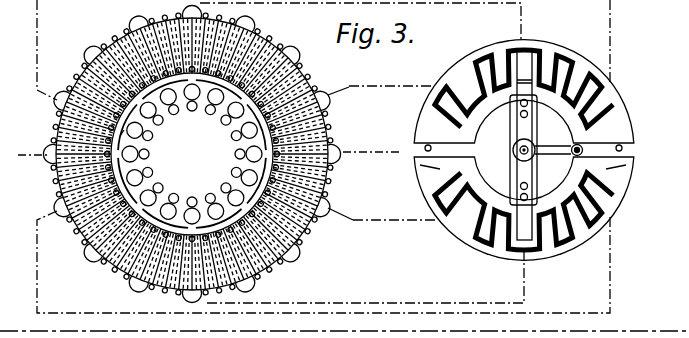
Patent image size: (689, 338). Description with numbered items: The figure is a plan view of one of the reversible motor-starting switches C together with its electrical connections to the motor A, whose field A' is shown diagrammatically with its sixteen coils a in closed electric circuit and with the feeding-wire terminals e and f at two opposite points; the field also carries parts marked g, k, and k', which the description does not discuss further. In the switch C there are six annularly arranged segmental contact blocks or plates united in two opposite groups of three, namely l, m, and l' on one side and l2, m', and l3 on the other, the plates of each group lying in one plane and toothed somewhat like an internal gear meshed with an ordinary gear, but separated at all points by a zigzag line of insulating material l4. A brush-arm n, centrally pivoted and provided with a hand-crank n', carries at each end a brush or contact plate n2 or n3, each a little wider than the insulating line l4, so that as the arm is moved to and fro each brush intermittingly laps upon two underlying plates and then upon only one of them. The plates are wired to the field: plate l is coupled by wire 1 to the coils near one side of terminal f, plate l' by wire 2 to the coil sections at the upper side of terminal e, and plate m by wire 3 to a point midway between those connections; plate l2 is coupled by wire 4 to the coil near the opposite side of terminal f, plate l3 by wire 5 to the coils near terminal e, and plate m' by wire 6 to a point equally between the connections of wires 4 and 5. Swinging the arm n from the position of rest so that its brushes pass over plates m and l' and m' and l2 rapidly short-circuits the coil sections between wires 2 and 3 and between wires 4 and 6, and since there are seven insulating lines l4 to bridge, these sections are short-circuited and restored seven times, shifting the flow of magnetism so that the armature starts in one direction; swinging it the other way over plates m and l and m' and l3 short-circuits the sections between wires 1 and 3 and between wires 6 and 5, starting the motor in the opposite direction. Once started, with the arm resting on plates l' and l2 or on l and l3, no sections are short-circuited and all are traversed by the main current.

The armature A is at (191, 153).
The motor-field A' is at (192, 136).
The field coils a is at (192, 154).
The feeding-wire terminal e is at (26, 151).
The feeding-wire terminal f is at (371, 157).
The armature core ring g is at (117, 136).
The conductor rods k is at (192, 154).
The small conductor rods k' is at (192, 154).
The motor-starting switch C is at (524, 145).
The segmental contact plate l is at (424, 136).
The segmental contact plate l' is at (616, 136).
The segmental contact plate l2 is at (430, 173).
The segmental contact plate l3 is at (616, 169).
The line of insulating material l4 is at (564, 60).
The contact plate m is at (482, 122).
The contact plate m' is at (485, 187).
The brush-arm n is at (523, 150).
The hand-crank n' is at (559, 142).
The brush or contact plate n2 is at (521, 60).
The brush or contact plate n3 is at (526, 243).
The wire 1 is at (381, 82).
The wire 2 is at (323, 50).
The wire 3 is at (360, 21).
The wire 4 is at (382, 212).
The wire 5 is at (323, 262).
The wire 6 is at (365, 277).